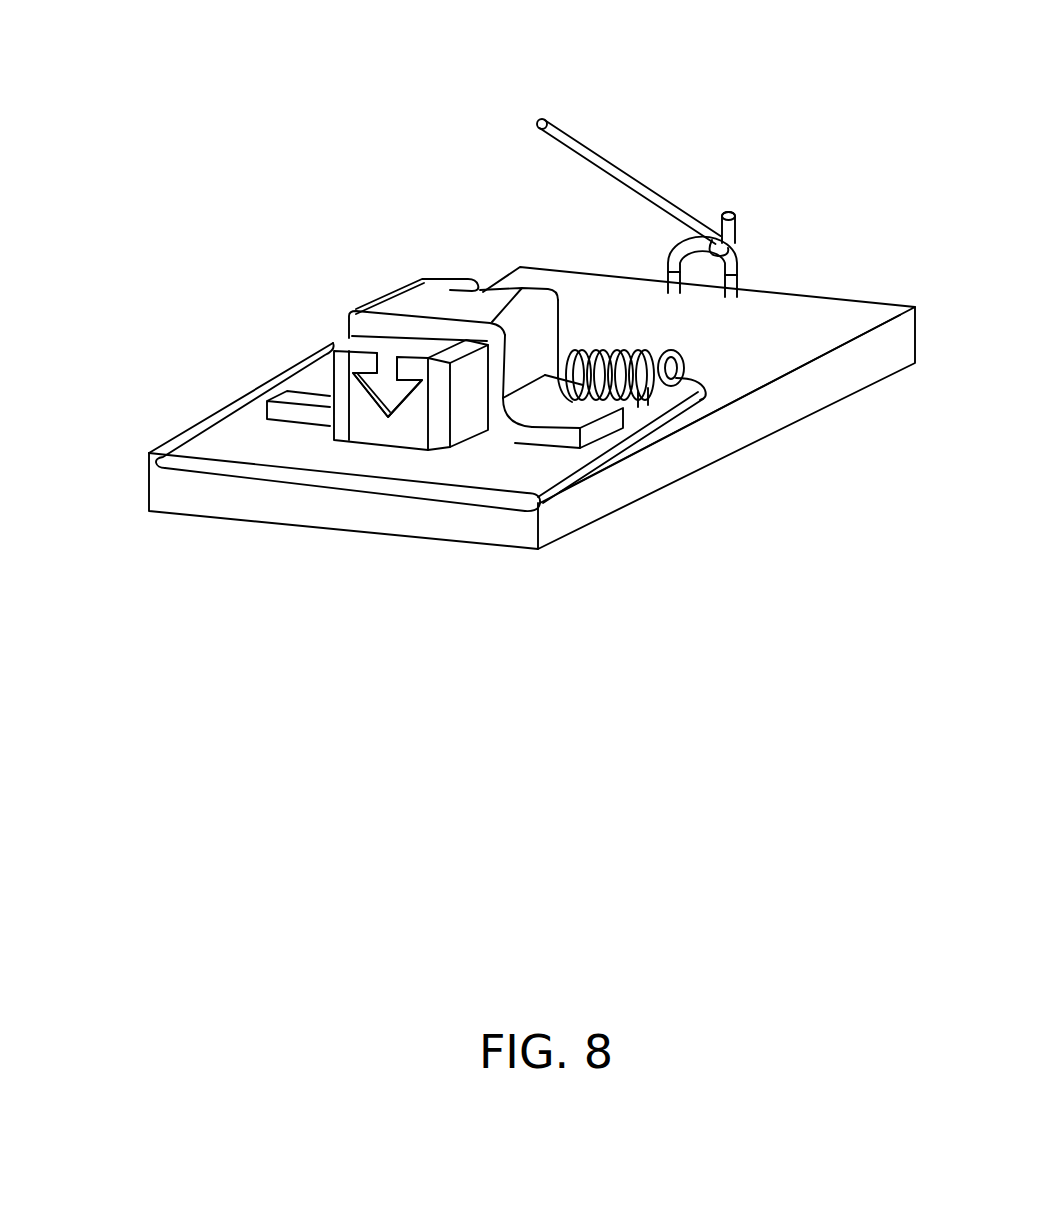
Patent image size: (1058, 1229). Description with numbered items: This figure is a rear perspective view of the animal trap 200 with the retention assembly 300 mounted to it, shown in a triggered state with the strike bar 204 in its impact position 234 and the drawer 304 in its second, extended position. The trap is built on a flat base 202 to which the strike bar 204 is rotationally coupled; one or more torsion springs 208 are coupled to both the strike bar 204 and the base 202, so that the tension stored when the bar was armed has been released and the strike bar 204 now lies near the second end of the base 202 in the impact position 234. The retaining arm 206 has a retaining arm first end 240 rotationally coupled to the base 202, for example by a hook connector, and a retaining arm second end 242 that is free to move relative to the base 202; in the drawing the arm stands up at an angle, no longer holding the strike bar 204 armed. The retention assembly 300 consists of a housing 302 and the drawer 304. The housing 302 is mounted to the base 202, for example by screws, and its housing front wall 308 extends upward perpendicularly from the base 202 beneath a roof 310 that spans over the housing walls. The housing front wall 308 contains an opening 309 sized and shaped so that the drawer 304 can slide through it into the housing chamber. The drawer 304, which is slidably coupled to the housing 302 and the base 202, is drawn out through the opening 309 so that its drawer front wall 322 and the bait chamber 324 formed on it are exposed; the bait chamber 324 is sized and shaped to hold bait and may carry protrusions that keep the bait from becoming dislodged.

The animal trap 200 is at (500, 345).
The base 202 is at (917, 305).
The strike bar 204 is at (540, 505).
The retaining arm 206 is at (629, 148).
The torsion spring 208 is at (665, 384).
The impact position 234 is at (760, 490).
The retaining arm first end 240 is at (742, 228).
The retaining arm second end 242 is at (541, 120).
The retention assembly 300 is at (415, 398).
The housing 302 is at (364, 386).
The drawer 304 is at (333, 435).
The housing front wall 308 is at (500, 430).
The opening 309 is at (500, 415).
The roof 310 is at (448, 312).
The drawer front wall 322 is at (375, 425).
The bait chamber 324 is at (400, 352).